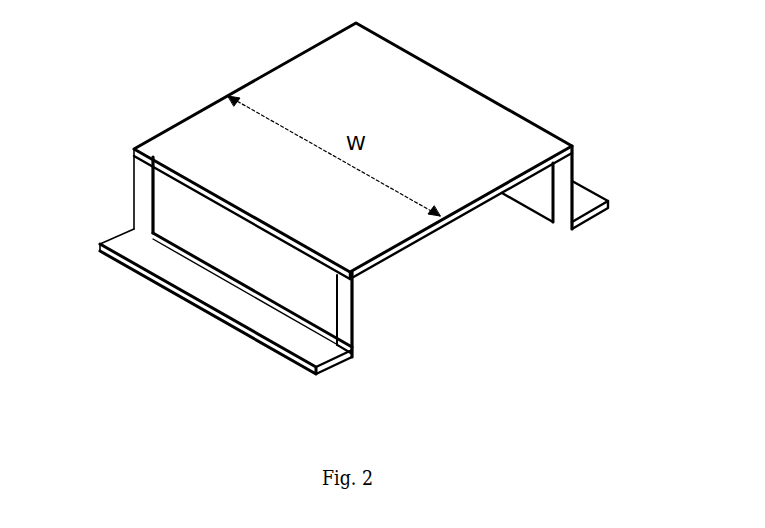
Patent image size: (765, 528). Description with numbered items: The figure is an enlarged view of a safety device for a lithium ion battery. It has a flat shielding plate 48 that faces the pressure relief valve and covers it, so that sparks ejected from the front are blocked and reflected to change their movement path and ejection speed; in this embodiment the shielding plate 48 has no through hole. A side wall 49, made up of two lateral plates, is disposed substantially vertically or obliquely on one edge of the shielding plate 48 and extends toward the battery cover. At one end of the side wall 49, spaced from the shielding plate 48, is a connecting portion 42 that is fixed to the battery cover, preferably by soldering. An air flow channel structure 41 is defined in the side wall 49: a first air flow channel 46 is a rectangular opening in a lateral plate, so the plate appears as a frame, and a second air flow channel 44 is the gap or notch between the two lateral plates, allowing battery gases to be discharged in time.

The air flow channel structure 41 is at (237, 254).
The connecting portion 42 is at (298, 343).
The second air flow channel 44 is at (455, 247).
The first air flow channel 46 is at (193, 221).
The shielding plate 48 is at (418, 90).
The side wall 49 is at (357, 307).